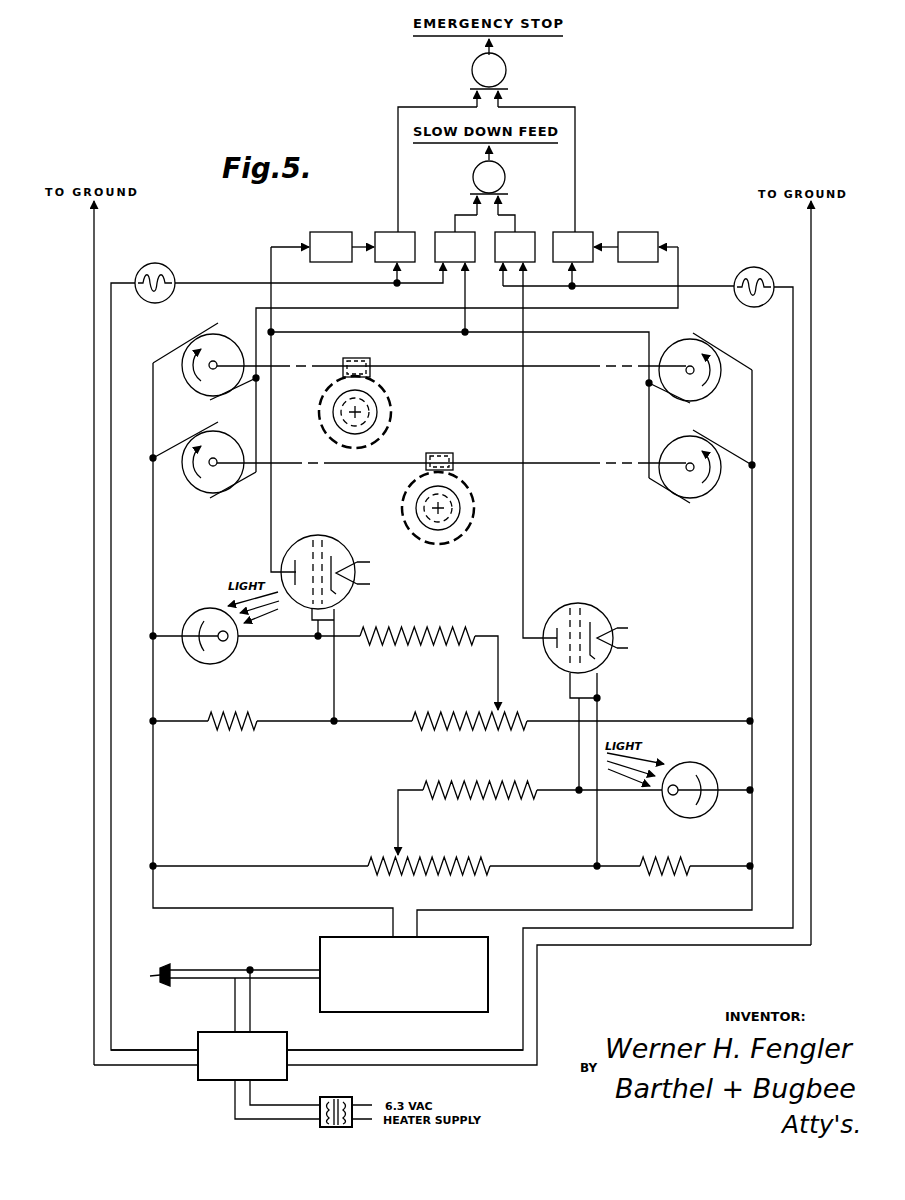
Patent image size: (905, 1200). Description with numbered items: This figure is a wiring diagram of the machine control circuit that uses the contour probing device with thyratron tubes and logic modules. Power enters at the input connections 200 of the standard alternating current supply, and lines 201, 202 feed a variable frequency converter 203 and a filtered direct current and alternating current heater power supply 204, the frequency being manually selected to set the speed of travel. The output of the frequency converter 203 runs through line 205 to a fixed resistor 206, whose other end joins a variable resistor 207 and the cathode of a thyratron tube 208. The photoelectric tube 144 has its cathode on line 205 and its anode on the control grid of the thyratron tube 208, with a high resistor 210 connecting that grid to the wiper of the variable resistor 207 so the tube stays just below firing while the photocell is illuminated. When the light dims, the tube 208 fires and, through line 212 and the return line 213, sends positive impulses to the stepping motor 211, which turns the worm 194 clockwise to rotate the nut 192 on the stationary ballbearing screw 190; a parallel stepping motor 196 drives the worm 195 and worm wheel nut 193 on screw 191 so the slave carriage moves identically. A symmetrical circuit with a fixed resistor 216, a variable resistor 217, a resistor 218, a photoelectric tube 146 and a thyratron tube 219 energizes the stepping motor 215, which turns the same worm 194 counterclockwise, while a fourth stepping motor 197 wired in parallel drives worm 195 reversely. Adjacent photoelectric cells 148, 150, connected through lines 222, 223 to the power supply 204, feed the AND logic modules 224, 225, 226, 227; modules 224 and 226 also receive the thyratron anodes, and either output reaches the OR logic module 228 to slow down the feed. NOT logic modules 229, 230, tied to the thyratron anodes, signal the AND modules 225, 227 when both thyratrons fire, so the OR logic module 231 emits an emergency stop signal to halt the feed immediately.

The photoelectric tube 144 is at (728, 750).
The photoelectric tube 146 is at (203, 610).
The photoelectric cell 148 is at (779, 255).
The photoelectric cell 150 is at (176, 256).
The stationary ballbearing screw 190 is at (425, 500).
The stationary ballbearing screw 191 is at (368, 410).
The rotating nut 192 is at (401, 506).
The rotating nut 193 is at (394, 411).
The worm 194 is at (458, 455).
The worm 195 is at (374, 358).
The stepping motor 196 is at (206, 361).
The stepping motor 197 is at (699, 368).
The input connections 200 is at (152, 970).
The line 201 is at (240, 970).
The line 202 is at (304, 980).
The variable frequency converter 203 is at (404, 974).
The direct current and alternating current heater power supply 204 is at (242, 1056).
The line 205 is at (752, 558).
The fixed resistor 206 is at (688, 858).
The variable resistor 207 is at (462, 858).
The thyratron tube 208 is at (597, 605).
The high resistor 210 is at (488, 781).
The stepping motor 211 is at (203, 460).
The line 212 is at (523, 508).
The line 213 is at (153, 537).
The stepping motor 215 is at (702, 466).
The fixed resistor 216 is at (254, 713).
The variable resistor 217 is at (470, 712).
The resistor 218 is at (428, 630).
The thyratron tube 219 is at (337, 540).
The line 222 is at (418, 1049).
The line 223 is at (166, 1050).
The AND logic module 224 is at (515, 247).
The AND logic module 225 is at (573, 247).
The AND logic module 226 is at (455, 247).
The AND logic module 227 is at (395, 247).
The OR logic module 228 is at (489, 177).
The NOT logic module 229 is at (638, 247).
The NOT logic module 230 is at (331, 247).
The OR logic module 231 is at (489, 70).